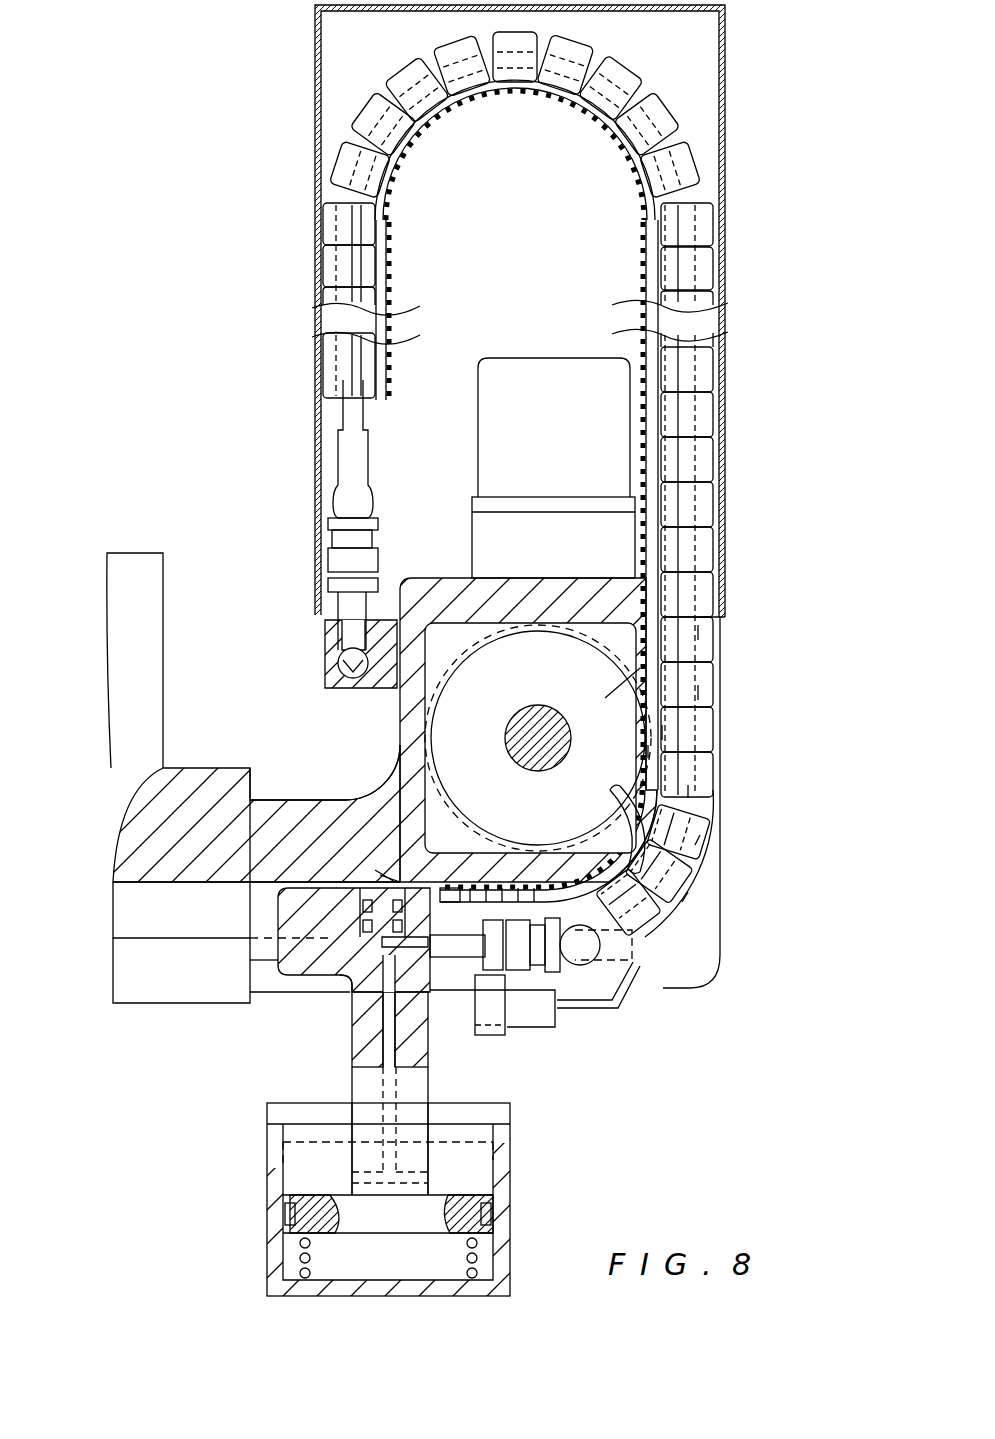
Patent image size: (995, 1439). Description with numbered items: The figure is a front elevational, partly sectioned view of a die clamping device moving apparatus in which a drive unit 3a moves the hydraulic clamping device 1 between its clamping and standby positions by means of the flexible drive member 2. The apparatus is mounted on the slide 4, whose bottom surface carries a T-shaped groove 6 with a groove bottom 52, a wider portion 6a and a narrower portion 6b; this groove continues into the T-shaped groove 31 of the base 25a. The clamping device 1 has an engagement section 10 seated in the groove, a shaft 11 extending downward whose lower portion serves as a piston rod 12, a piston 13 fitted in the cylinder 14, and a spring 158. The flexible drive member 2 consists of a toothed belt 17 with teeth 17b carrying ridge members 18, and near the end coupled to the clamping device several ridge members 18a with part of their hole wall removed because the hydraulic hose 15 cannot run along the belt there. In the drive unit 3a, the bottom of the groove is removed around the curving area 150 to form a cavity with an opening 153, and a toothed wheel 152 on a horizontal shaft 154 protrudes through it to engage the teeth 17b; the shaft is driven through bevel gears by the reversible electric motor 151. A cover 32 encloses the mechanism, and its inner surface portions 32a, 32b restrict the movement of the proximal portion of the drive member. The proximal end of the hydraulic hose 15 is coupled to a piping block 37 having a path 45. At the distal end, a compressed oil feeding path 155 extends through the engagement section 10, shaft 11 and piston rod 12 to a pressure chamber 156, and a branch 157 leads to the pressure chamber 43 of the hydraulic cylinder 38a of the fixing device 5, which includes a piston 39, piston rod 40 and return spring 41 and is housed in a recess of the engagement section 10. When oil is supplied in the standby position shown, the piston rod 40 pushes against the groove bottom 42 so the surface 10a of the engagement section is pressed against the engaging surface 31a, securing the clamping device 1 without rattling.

The hydraulic clamping device 1 is at (383, 1195).
The flexible drive member 2 is at (724, 456).
The drive unit 3a is at (605, 698).
The slide 4 is at (135, 628).
The fixing device 5 is at (365, 880).
The T-shaped groove 6 is at (140, 942).
The wider portion 6a is at (113, 933).
The narrower portion 6b is at (120, 960).
The engagement section 10 is at (305, 970).
The surface of the engagement section 10a is at (305, 985).
The shaft 11 is at (410, 1066).
The piston rod 12 is at (470, 1162).
The piston 13 is at (485, 1195).
The cylinder 14 is at (510, 1247).
The hydraulic hose 15 is at (655, 945).
The toothed belt 17 is at (633, 547).
The teeth 17b is at (633, 652).
The ridge members 18 is at (700, 630).
The ridge members 18a is at (700, 838).
The base 25a is at (702, 988).
The T-shaped groove 31 is at (262, 950).
The engaging surface 31a is at (240, 925).
The cover 32 is at (722, 206).
The inner surface portion 32a is at (326, 132).
The inner surface portion 32b is at (713, 150).
The piping block 37 is at (330, 652).
The hydraulic cylinder 38a is at (440, 893).
The piston 39 is at (330, 800).
The piston rod 40 is at (380, 875).
The return spring 41 is at (385, 880).
The groove bottom 42 is at (255, 897).
The pressure chamber 43 is at (350, 945).
The path 45 is at (338, 668).
The groove bottom 52 is at (140, 882).
The inner arcuate surface portion 150 is at (600, 880).
The electric motor 151 is at (595, 425).
The toothed wheel 152 is at (664, 730).
The opening 153 is at (690, 790).
The horizontal shaft 154 is at (650, 750).
The compressed oil feeding path 155 is at (403, 1086).
The pressure chamber 156 is at (307, 1173).
The branch 157 is at (365, 950).
The spring 158 is at (307, 1253).